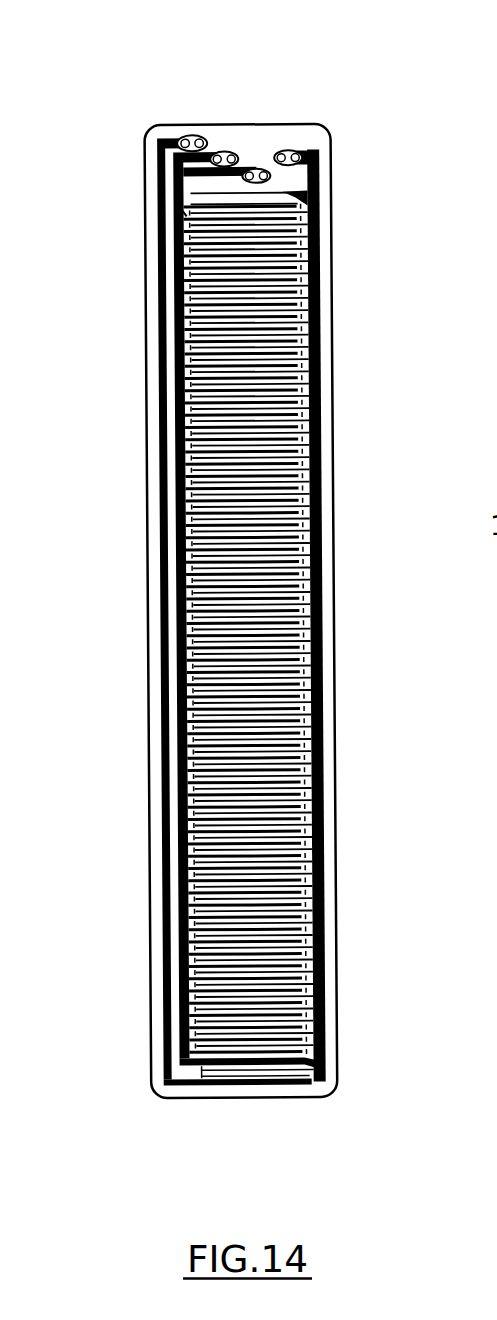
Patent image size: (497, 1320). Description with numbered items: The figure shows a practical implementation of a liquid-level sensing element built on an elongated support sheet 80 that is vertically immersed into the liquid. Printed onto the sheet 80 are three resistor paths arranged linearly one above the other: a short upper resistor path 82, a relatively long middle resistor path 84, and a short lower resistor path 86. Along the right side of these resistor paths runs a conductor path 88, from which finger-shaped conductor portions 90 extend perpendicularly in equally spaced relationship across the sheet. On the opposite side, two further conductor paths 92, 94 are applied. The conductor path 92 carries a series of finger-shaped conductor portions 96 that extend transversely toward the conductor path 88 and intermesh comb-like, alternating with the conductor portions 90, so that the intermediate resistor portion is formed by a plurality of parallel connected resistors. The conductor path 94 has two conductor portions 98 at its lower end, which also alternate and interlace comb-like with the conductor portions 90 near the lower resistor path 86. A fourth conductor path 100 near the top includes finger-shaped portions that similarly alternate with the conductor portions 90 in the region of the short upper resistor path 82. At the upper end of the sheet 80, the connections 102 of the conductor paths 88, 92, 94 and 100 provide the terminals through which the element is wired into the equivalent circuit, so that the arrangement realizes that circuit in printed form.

The support sheet 80 is at (343, 420).
The resistor path 82 is at (297, 200).
The resistor path 84 is at (307, 332).
The resistor path 86 is at (300, 1078).
The conductor path 88 is at (322, 517).
The conductor portions 90 is at (301, 650).
The conductor path 92 is at (170, 220).
The conductor path 94 is at (162, 230).
The conductor portions 96 is at (172, 200).
The conductor portions 98 is at (165, 1082).
The fourth conductor path 100 is at (244, 170).
The connections 102 is at (190, 136).